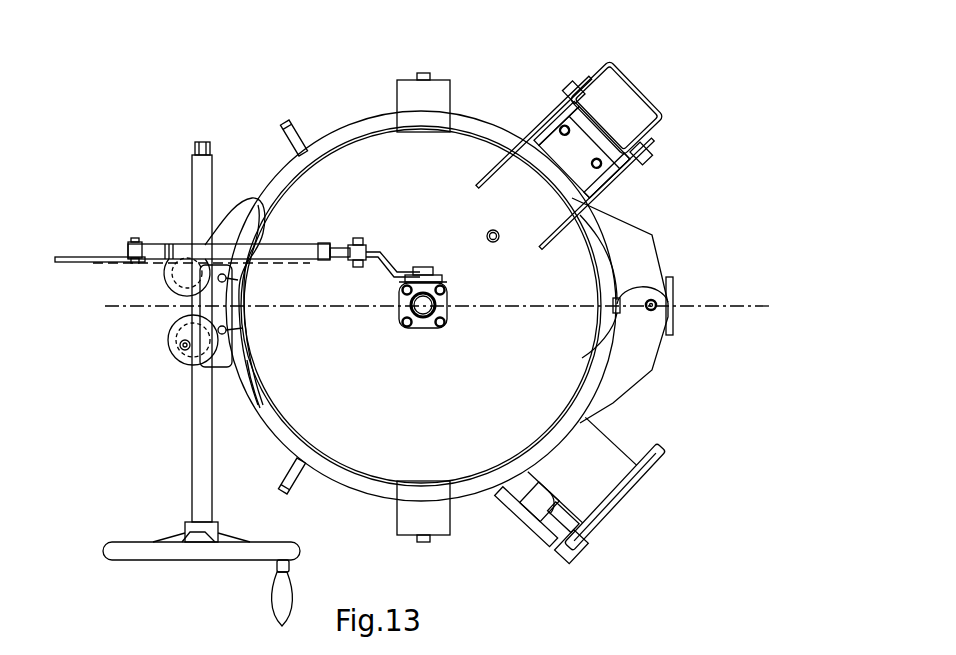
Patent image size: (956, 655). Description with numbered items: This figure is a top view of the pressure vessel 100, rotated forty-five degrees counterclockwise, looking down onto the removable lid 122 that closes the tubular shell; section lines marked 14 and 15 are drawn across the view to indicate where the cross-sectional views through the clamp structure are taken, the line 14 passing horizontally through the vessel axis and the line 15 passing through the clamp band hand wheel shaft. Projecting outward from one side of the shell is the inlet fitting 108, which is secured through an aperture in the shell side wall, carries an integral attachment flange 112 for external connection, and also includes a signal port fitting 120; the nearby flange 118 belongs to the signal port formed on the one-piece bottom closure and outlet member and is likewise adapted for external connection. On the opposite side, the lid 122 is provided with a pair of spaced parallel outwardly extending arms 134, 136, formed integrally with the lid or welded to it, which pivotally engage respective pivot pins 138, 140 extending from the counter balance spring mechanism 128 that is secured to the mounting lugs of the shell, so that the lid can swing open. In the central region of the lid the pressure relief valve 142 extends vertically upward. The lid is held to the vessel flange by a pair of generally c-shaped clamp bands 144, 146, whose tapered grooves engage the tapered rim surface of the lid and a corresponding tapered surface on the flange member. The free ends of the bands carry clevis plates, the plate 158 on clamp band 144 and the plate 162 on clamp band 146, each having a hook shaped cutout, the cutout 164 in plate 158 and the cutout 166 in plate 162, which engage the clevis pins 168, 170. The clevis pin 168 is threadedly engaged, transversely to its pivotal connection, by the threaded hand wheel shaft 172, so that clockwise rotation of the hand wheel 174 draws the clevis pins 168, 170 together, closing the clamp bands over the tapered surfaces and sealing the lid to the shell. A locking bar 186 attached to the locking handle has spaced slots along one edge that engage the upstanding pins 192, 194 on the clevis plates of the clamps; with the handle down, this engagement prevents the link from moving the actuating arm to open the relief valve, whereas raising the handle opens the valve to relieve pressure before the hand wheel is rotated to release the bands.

The section line 14 is at (106, 308).
The section line 15 is at (96, 264).
The pressure vessel 100 is at (431, 544).
The inlet fitting 108 is at (618, 437).
The attachment flange 112 is at (628, 502).
The flange 118 is at (519, 515).
The signal port fitting 120 is at (580, 530).
The removable lid 122 is at (363, 428).
The counter balance spring mechanism 128 is at (628, 92).
The outwardly extending arm 134 is at (536, 124).
The outwardly extending arm 136 is at (614, 178).
The pivot pin 138 is at (578, 80).
The pivot pin 140 is at (662, 155).
The pressure relief valve 142 is at (412, 262).
The clamp band 144 is at (326, 134).
The clamp band 146 is at (297, 494).
The clevis plate 158 is at (131, 250).
The clevis plate 162 is at (222, 336).
The hook shaped cutout 164 is at (178, 243).
The hook shaped cutout 166 is at (210, 357).
The clevis pin 168 is at (180, 347).
The clevis pin 170 is at (200, 348).
The threaded hand wheel shaft 172 is at (194, 148).
The hand wheel 174 is at (190, 562).
The locking bar 186 is at (218, 367).
The upstanding pin 192 is at (263, 196).
The upstanding pin 194 is at (252, 372).